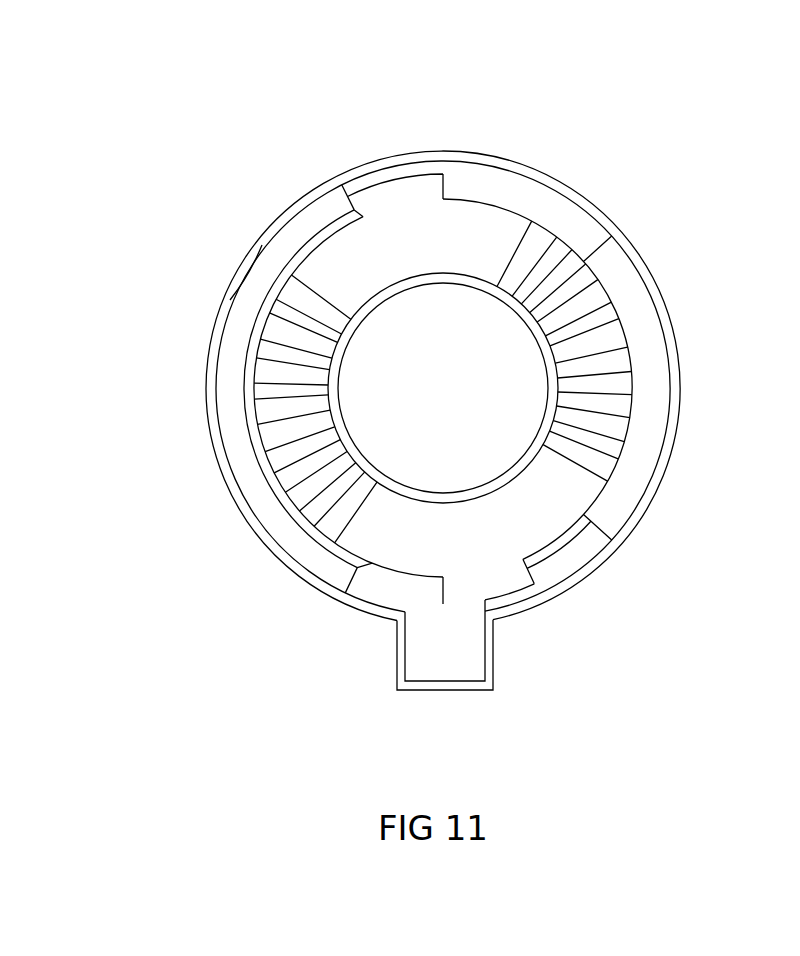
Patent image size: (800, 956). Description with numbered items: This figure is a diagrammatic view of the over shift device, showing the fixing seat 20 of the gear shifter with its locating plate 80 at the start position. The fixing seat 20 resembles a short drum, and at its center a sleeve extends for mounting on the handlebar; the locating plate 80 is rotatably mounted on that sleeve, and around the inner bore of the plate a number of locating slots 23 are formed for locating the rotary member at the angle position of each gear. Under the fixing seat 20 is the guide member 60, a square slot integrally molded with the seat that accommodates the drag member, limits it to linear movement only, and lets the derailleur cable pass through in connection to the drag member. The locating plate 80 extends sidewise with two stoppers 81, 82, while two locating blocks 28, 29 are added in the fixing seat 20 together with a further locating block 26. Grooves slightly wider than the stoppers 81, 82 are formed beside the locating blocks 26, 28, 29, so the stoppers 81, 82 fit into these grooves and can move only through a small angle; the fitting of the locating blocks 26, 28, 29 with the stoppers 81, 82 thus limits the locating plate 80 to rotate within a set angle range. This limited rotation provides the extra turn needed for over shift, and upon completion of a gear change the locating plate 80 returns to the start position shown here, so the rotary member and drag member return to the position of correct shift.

The fixing seat 20 is at (678, 335).
The locating slots 23 is at (286, 455).
The locating block 26 is at (270, 258).
The locating block 28 is at (565, 213).
The locating block 29 is at (575, 558).
The guide member 60 is at (455, 660).
The locating plate 80 is at (400, 578).
The stopper 81 is at (393, 192).
The stopper 82 is at (488, 578).